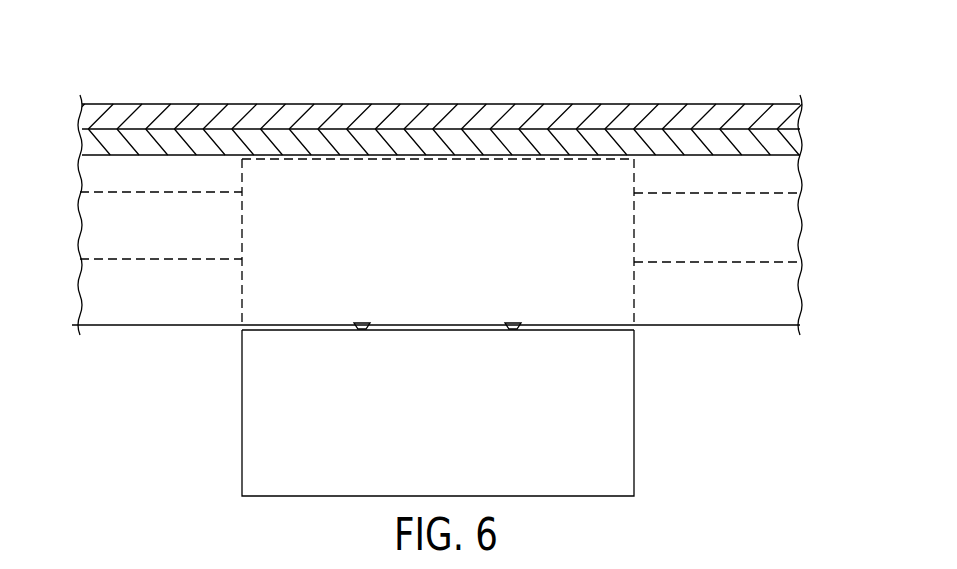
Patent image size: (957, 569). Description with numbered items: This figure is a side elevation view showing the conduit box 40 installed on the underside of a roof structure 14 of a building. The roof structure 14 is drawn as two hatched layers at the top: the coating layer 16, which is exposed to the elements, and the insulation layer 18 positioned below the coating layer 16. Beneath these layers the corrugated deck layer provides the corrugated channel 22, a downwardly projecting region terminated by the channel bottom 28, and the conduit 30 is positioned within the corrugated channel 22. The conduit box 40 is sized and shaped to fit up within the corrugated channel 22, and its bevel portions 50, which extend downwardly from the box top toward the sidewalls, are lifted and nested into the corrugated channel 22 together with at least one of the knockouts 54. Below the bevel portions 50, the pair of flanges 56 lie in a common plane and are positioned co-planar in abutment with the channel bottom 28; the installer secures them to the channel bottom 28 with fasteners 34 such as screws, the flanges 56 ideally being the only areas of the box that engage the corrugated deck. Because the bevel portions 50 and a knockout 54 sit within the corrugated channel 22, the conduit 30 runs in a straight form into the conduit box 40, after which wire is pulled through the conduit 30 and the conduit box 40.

The roof structure 14 is at (158, 57).
The coating layer 16 is at (316, 118).
The insulation layer 18 is at (530, 138).
The corrugated channel 22 is at (138, 300).
The channel bottom 28 is at (105, 325).
The conduit 30 is at (138, 232).
The fasteners 34 is at (516, 322).
The conduit box 40 is at (241, 430).
The bevel portions 50 is at (636, 284).
The knockouts 54 is at (632, 218).
The flanges 56 is at (545, 331).